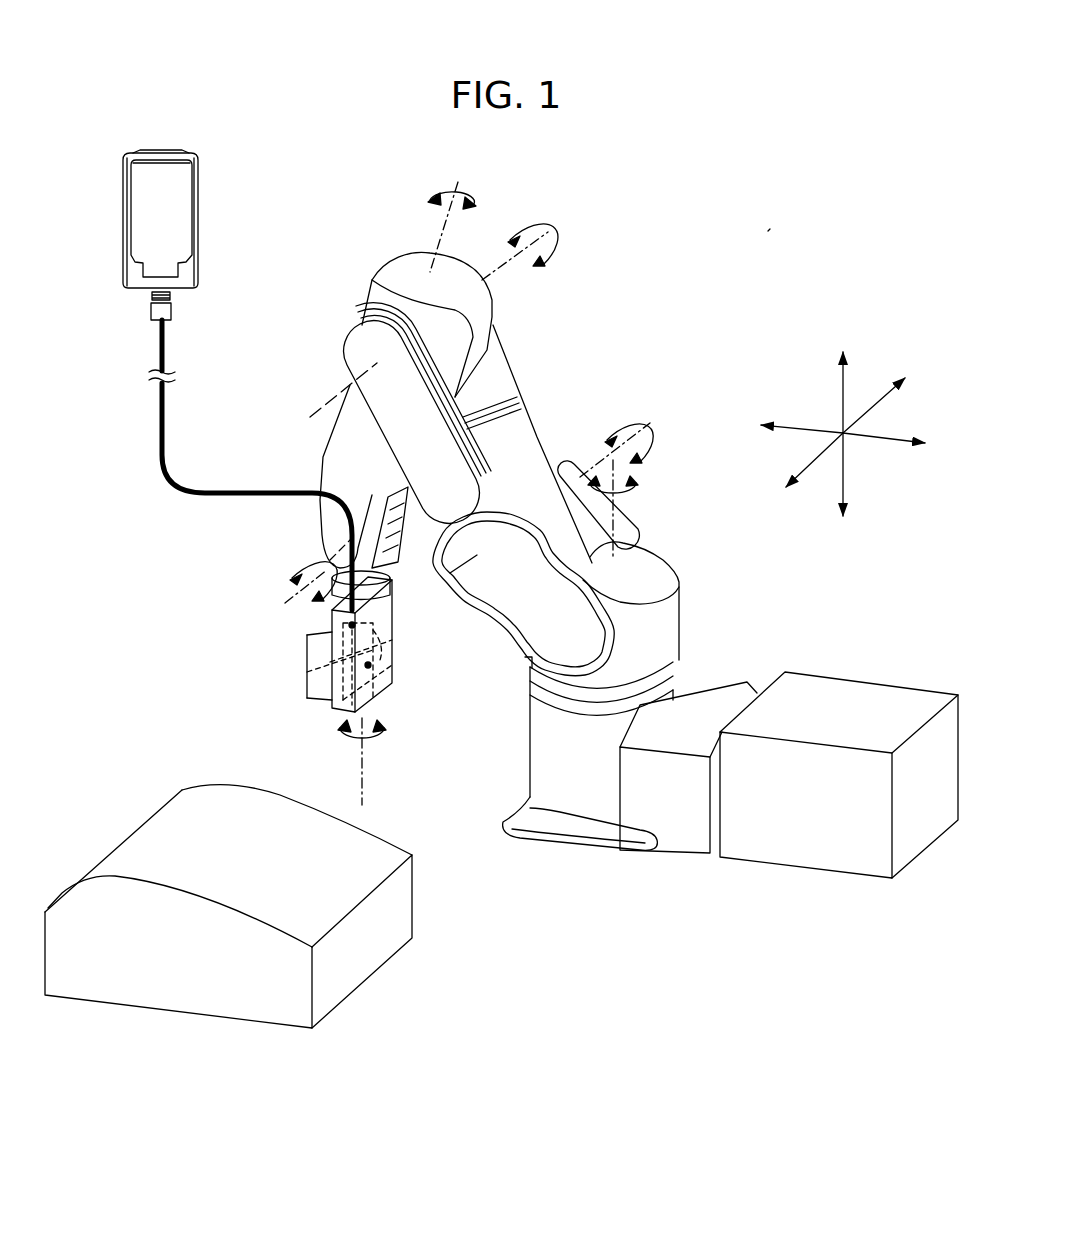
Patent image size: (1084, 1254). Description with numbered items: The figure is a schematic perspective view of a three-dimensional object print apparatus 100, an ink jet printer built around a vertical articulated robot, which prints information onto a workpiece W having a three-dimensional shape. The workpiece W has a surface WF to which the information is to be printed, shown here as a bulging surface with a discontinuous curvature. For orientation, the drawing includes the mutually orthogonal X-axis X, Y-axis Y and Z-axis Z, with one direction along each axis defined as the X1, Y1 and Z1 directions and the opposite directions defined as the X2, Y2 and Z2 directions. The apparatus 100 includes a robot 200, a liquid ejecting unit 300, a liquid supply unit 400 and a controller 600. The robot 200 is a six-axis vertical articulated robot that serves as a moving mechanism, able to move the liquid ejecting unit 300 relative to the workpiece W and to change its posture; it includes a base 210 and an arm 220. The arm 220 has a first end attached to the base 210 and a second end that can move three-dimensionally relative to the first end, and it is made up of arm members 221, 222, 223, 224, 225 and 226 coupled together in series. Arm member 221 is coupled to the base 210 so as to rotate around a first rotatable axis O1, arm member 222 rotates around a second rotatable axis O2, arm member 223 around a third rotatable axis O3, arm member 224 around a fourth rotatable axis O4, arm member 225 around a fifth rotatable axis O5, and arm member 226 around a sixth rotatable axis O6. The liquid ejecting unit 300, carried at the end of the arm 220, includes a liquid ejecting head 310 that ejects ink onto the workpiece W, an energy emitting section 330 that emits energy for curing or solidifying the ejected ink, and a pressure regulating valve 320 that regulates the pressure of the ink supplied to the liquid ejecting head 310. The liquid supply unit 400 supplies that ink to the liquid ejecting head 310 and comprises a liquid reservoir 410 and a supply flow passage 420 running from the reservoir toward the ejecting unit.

The three-dimensional object print apparatus 100 is at (768, 231).
The robot 200 is at (617, 360).
The base 210 is at (597, 795).
The arm 220 is at (345, 341).
The arm member 221 is at (645, 545).
The arm member 222 is at (540, 380).
The arm member 223 is at (407, 256).
The arm member 224 is at (330, 450).
The arm member 225 is at (393, 575).
The arm member 226 is at (333, 596).
The liquid ejecting unit 300 is at (305, 644).
The liquid ejecting head 310 is at (337, 693).
The pressure regulating valve 320 is at (325, 672).
The energy emitting section 330 is at (307, 648).
The liquid supply unit 400 is at (158, 345).
The liquid reservoir 410 is at (193, 224).
The supply flow passage 420 is at (158, 430).
The controller 600 is at (870, 683).
The workpiece W is at (110, 840).
The surface WF is at (180, 815).
The first rotatable axis O1 is at (618, 505).
The second rotatable axis O2 is at (588, 467).
The third rotatable axis O3 is at (500, 276).
The fourth rotatable axis O4 is at (436, 239).
The fifth rotatable axis O5 is at (290, 596).
The sixth rotatable axis O6 is at (358, 748).
The X1 direction X1 is at (902, 444).
The X2 direction X2 is at (784, 425).
The Y1 direction Y1 is at (890, 393).
The Y2 direction Y2 is at (794, 476).
The Z1 direction Z1 is at (843, 377).
The Z2 direction Z2 is at (843, 494).
The X-axis X is at (876, 442).
The Y-axis Y is at (815, 458).
The Z-axis Z is at (843, 408).